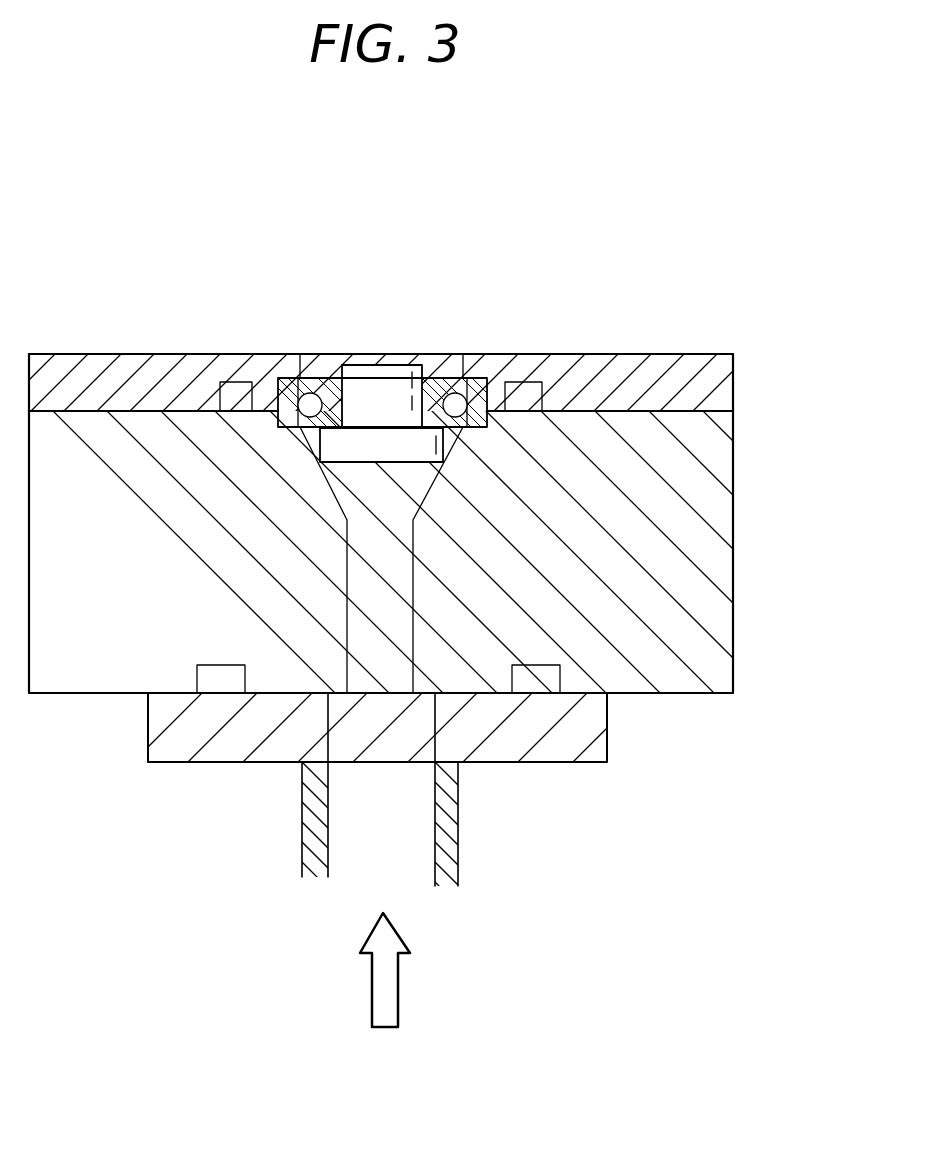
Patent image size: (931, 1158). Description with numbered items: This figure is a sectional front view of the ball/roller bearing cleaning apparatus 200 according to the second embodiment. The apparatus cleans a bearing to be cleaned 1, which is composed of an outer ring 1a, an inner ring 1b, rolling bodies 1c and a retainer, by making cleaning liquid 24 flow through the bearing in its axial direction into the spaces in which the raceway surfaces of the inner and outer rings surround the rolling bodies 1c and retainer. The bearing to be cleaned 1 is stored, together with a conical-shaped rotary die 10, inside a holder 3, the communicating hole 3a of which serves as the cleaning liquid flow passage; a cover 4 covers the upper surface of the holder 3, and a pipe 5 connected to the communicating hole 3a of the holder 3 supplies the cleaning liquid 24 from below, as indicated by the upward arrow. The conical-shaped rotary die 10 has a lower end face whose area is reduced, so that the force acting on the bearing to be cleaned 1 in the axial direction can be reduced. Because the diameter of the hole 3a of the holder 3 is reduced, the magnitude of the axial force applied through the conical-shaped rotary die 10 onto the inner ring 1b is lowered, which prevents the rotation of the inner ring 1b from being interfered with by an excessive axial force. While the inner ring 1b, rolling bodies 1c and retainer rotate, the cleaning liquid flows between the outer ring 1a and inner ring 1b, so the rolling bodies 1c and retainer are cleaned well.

The ball/roller bearing cleaning apparatus 200 is at (626, 250).
The bearing to be cleaned 1 is at (403, 328).
The outer ring 1a is at (478, 383).
The inner ring 1b is at (432, 383).
The rolling bodies 1c is at (454, 392).
The holder 3 is at (733, 541).
The communicating hole 3a is at (403, 630).
The cover 4 is at (733, 383).
The pipe 5 is at (458, 836).
The conical-shaped rotary die 10 is at (330, 490).
The cleaning liquid 24 is at (398, 985).